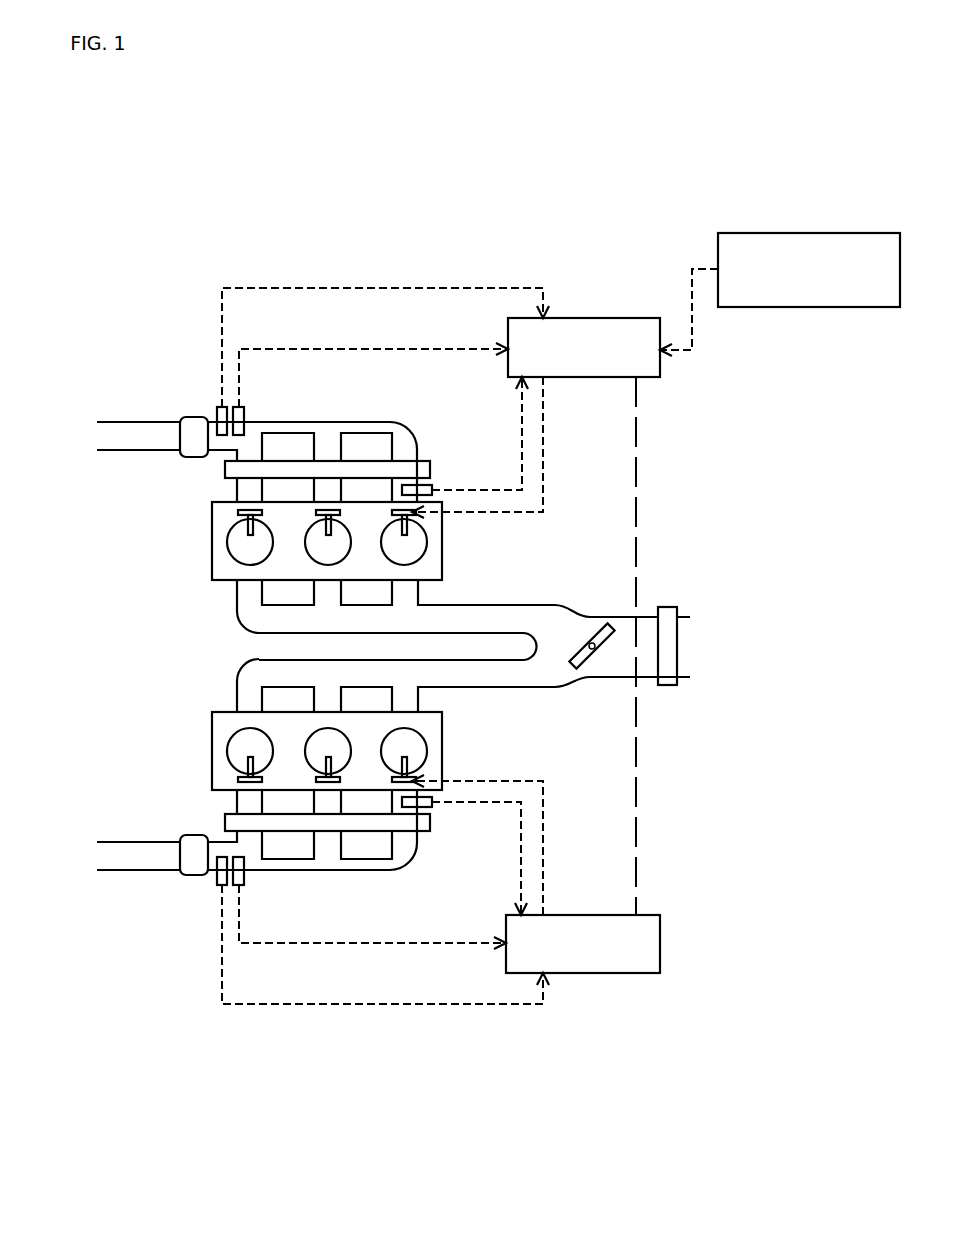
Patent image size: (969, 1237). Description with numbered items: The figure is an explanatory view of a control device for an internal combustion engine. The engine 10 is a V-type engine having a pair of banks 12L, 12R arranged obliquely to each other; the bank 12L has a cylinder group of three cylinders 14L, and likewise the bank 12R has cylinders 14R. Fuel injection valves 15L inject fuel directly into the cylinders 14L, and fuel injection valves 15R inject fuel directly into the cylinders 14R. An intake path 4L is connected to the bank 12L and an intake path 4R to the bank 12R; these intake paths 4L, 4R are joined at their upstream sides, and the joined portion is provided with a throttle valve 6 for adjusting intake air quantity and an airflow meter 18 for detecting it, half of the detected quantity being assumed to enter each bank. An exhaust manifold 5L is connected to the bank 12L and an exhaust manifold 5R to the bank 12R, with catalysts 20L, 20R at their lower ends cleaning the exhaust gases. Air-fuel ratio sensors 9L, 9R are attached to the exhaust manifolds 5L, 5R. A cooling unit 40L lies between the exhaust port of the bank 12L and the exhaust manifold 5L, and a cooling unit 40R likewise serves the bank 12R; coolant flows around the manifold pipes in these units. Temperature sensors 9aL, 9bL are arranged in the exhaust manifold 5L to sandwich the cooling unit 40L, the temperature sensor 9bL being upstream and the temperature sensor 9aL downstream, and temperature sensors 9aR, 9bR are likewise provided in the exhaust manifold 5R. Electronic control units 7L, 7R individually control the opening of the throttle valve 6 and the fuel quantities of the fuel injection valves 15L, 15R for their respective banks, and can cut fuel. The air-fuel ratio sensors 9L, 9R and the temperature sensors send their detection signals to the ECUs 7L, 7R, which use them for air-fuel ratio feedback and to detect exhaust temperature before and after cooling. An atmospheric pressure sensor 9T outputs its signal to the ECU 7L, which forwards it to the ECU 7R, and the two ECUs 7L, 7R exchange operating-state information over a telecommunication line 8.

The engine 10 is at (151, 659).
The bank 12L is at (163, 563).
The bank 12R is at (180, 757).
The cylinders 14L is at (223, 557).
The cylinders 14R is at (240, 735).
The fuel injection valves 15L is at (236, 511).
The fuel injection valves 15R is at (230, 770).
The exhaust manifold 5L is at (335, 422).
The exhaust manifold 5R is at (335, 870).
The cooling unit 40L is at (430, 463).
The cooling unit 40R is at (430, 831).
The catalyst 20L is at (195, 457).
The catalyst 20R is at (187, 837).
The air-fuel ratio sensor 9L is at (217, 407).
The air-fuel ratio sensor 9R is at (215, 885).
The temperature sensor 9aL is at (245, 407).
The temperature sensor 9aR is at (247, 885).
The temperature sensor 9bL is at (432, 486).
The temperature sensor 9bR is at (433, 808).
The atmospheric pressure sensor 9T is at (866, 233).
The ECU 7L is at (610, 318).
The ECU 7R is at (618, 974).
The telecommunication line 8 is at (640, 410).
The intake path 4L is at (473, 603).
The intake path 4R is at (473, 690).
The throttle valve 6 is at (600, 616).
The airflow meter 18 is at (670, 607).